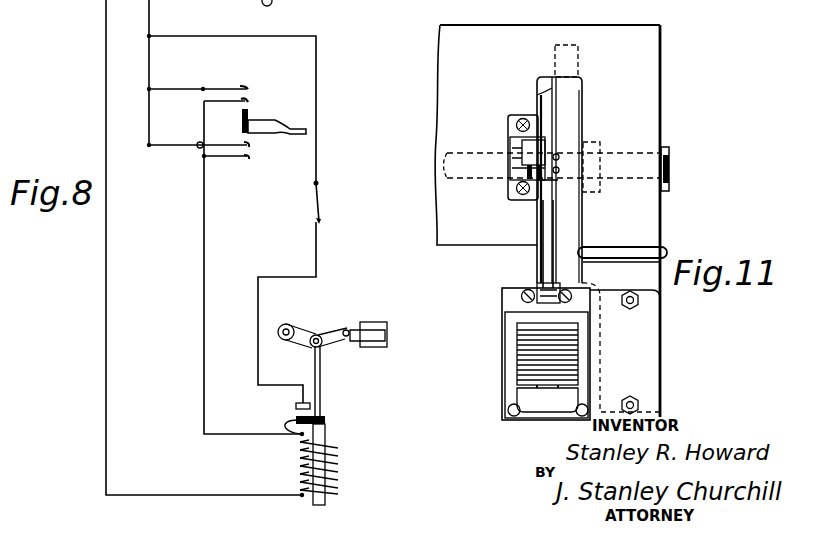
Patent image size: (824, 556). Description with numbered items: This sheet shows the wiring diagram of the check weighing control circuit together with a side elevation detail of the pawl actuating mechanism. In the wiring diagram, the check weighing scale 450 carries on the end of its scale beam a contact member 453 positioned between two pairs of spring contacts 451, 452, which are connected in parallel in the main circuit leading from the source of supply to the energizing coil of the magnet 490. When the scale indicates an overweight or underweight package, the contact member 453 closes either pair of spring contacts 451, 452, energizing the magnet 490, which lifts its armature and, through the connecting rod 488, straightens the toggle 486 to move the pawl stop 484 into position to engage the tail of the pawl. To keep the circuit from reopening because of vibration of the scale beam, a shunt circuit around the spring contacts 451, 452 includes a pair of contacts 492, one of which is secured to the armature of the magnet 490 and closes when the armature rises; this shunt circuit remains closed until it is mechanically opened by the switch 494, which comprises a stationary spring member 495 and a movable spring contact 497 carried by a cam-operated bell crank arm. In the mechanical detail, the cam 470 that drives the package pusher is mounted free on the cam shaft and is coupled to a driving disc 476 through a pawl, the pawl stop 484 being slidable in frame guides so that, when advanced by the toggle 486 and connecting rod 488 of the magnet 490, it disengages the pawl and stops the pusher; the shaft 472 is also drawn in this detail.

In FIG. 8, the check weighing scale 450 is at (300, 118).
In FIG. 8, the spring contacts 451 is at (237, 89).
In FIG. 8, the spring contacts 452 is at (246, 101).
In FIG. 8, the contact member 453 is at (242, 118).
In FIG. 11, the cam 470 is at (573, 94).
In FIG. 11, the shaft 472 is at (628, 155).
In FIG. 11, the driving disc 476 is at (553, 77).
In FIG. 8, the pawl stop 484 is at (377, 330).
In FIG. 8, the toggle 486 is at (317, 336).
In FIG. 11, the toggle 486 is at (520, 183).
In FIG. 8, the connecting rod 488 is at (320, 378).
In FIG. 11, the connecting rod 488 is at (545, 257).
In FIG. 8, the magnet 490 is at (334, 452).
In FIG. 11, the magnet 490 is at (517, 350).
In FIG. 8, the contacts 492 is at (300, 420).
In FIG. 11, the contacts 492 is at (540, 284).
In FIG. 8, the switch 494 is at (320, 205).
In FIG. 8, the stationary spring member 495 is at (263, 4).
In FIG. 8, the movable spring contact 497 is at (295, 0).